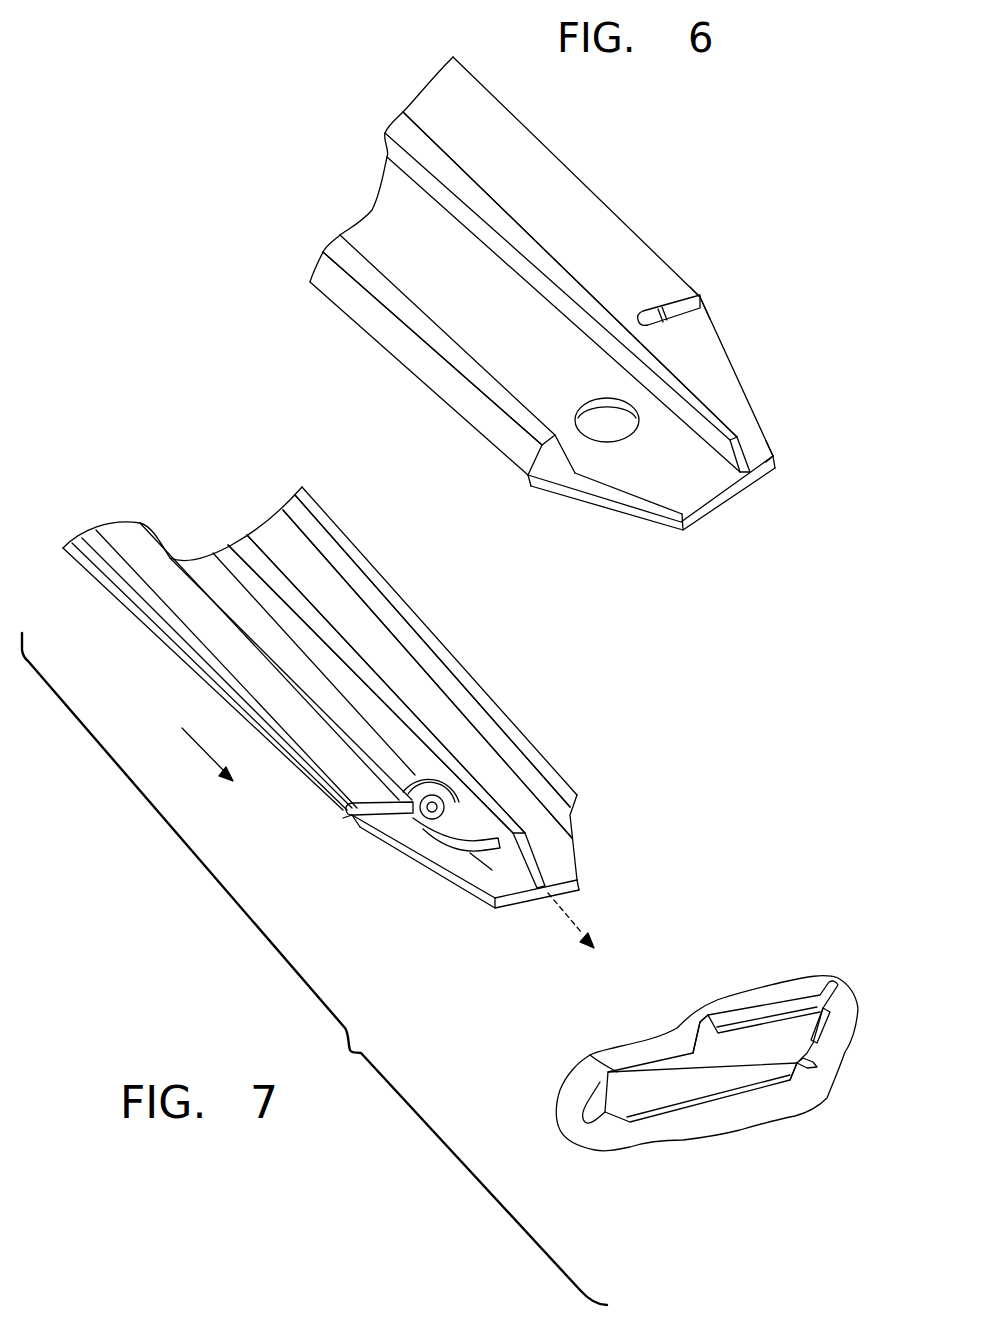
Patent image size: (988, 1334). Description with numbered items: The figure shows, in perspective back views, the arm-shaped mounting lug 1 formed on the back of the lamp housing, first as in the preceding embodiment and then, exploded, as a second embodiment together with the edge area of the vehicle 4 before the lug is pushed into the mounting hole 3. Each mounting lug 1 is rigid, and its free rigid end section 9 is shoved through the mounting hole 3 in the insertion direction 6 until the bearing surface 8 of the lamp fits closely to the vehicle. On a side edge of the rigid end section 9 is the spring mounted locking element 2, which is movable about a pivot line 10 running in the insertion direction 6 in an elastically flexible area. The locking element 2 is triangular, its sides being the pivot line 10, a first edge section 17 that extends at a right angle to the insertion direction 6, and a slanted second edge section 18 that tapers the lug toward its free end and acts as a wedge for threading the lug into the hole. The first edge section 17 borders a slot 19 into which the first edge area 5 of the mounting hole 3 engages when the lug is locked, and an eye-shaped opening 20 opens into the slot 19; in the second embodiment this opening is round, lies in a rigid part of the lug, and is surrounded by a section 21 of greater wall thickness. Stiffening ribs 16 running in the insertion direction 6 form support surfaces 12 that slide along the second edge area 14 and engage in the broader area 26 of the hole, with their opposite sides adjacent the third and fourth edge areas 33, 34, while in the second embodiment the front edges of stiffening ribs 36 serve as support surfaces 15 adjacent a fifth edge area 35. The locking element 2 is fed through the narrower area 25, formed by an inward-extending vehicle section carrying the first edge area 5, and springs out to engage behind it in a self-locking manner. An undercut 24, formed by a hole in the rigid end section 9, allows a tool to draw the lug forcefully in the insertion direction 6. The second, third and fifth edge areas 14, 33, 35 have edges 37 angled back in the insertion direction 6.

In FIG. 6, the mounting lug 1 is at (512, 145).
In FIG. 7, the mounting lug 1 is at (233, 651).
In FIG. 6, the spring mounted locking element 2 is at (725, 394).
In FIG. 7, the spring mounted locking element 2 is at (388, 822).
In FIG. 7, the mounting hole 3 is at (642, 1090).
In FIG. 7, the vehicle 4 is at (835, 1075).
In FIG. 7, the first edge area 5 is at (637, 1082).
In FIG. 7, the insertion direction 6 is at (625, 910).
In FIG. 6, the bearing surface 8 is at (677, 310).
In FIG. 6, the rigid end section 9 is at (655, 480).
In FIG. 7, the rigid end section 9 is at (553, 842).
In FIG. 7, the pivot line 10 is at (465, 878).
In FIG. 6, the support surfaces 12 is at (513, 232).
In FIG. 7, the second edge area 14 is at (686, 1100).
In FIG. 7, the support surfaces 15 is at (353, 660).
In FIG. 6, the stiffening ribs 16 is at (403, 338).
In FIG. 6, the first edge section 17 is at (703, 310).
In FIG. 6, the second edge section 18 is at (775, 456).
In FIG. 6, the slot 19 is at (707, 298).
In FIG. 7, the slot 19 is at (350, 818).
In FIG. 6, the eye-shaped opening 20 is at (652, 307).
In FIG. 7, the eye-shaped opening 20 is at (402, 820).
In FIG. 7, the section 21 is at (490, 885).
In FIG. 6, the undercut 24 is at (607, 428).
In FIG. 7, the narrower area 25 is at (613, 1093).
In FIG. 7, the broader area 26 is at (763, 1050).
In FIG. 7, the third edge area 33 is at (858, 1018).
In FIG. 7, the fourth edge area 34 is at (690, 1038).
In FIG. 7, the fifth edge area 35 is at (768, 1020).
In FIG. 7, the stiffening ribs 36 is at (417, 753).
In FIG. 7, the edges 37 is at (735, 1088).